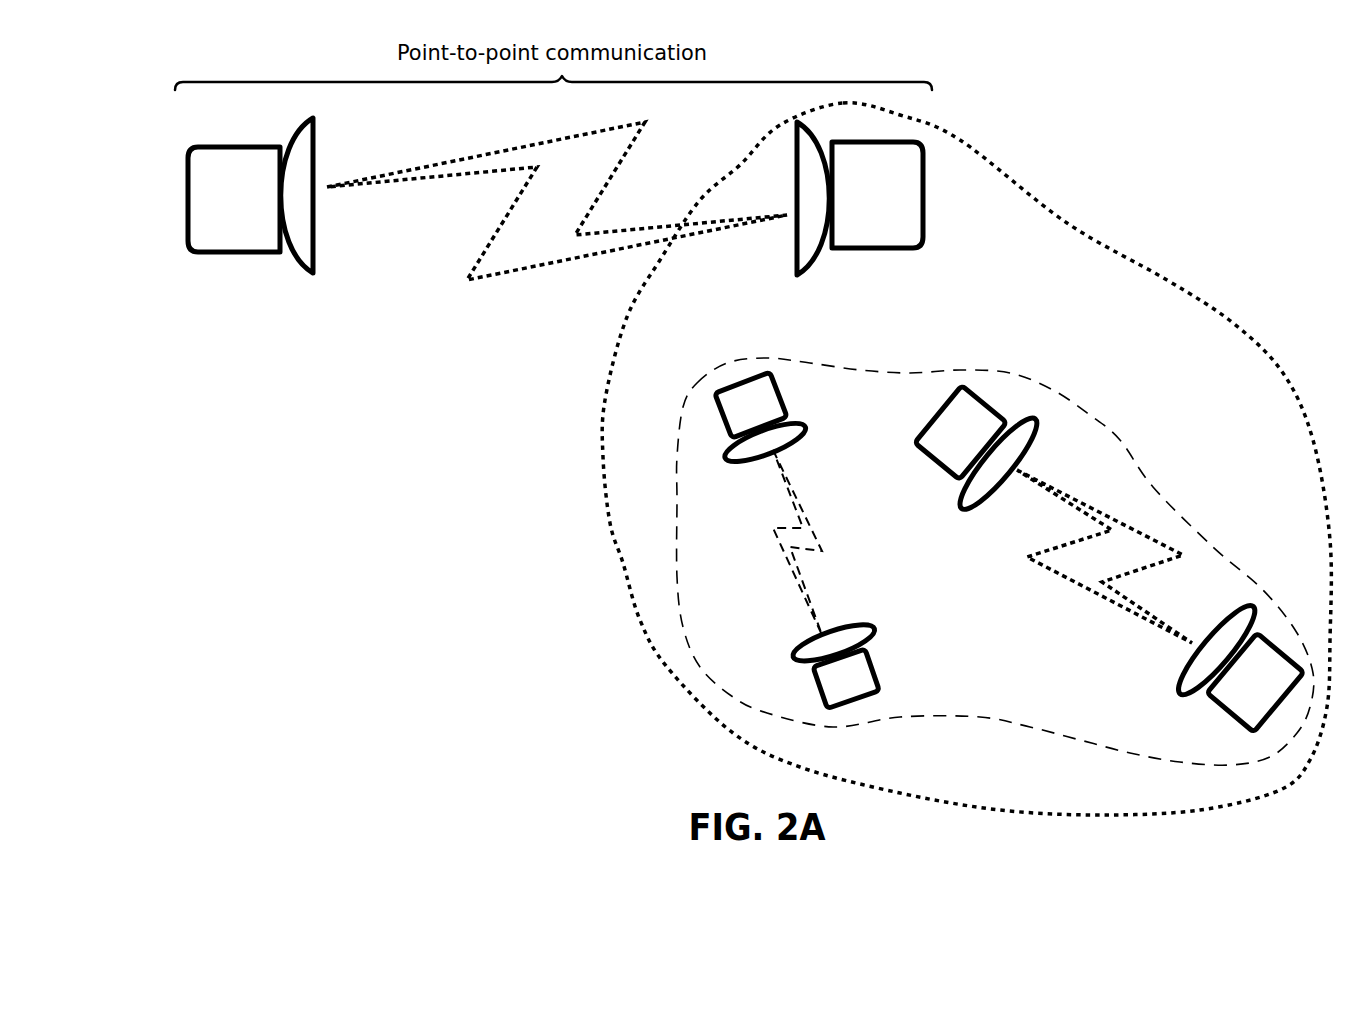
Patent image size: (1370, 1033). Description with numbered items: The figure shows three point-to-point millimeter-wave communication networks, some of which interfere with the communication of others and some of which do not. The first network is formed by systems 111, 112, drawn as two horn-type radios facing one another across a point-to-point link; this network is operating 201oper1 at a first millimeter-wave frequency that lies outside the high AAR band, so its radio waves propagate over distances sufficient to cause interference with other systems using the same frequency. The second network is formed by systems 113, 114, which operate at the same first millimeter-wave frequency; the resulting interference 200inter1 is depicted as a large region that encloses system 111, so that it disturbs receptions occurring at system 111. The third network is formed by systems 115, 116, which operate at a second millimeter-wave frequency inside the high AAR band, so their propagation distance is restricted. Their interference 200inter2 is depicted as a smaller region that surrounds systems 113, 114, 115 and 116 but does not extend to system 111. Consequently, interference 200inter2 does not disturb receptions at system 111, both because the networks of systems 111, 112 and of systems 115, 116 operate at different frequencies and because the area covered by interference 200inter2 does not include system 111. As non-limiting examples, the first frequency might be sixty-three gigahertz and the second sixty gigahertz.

The system 111 is at (859, 240).
The system 112 is at (216, 238).
The system 113 is at (1236, 698).
The system 114 is at (938, 449).
The system 115 is at (826, 691).
The system 116 is at (729, 415).
The operation at a first millimeter-wave frequency 201oper1 is at (546, 266).
The interference at a first millimeter-wave frequency 200inter1 is at (603, 455).
The interference at a second millimeter-wave frequency 200inter2 is at (683, 592).